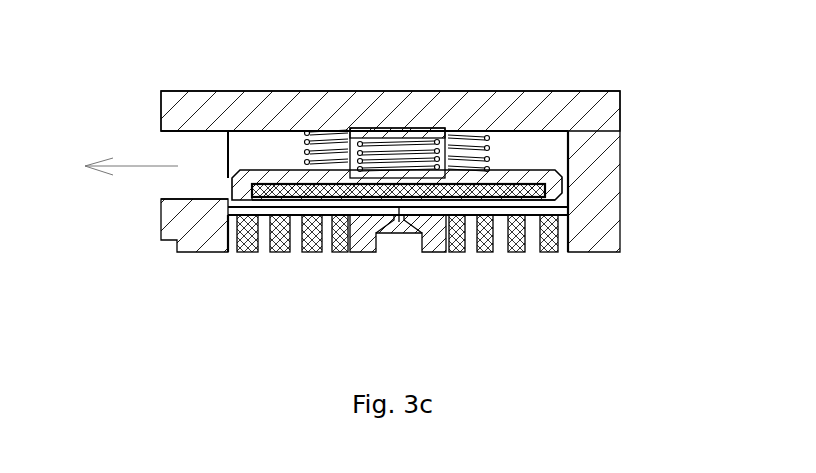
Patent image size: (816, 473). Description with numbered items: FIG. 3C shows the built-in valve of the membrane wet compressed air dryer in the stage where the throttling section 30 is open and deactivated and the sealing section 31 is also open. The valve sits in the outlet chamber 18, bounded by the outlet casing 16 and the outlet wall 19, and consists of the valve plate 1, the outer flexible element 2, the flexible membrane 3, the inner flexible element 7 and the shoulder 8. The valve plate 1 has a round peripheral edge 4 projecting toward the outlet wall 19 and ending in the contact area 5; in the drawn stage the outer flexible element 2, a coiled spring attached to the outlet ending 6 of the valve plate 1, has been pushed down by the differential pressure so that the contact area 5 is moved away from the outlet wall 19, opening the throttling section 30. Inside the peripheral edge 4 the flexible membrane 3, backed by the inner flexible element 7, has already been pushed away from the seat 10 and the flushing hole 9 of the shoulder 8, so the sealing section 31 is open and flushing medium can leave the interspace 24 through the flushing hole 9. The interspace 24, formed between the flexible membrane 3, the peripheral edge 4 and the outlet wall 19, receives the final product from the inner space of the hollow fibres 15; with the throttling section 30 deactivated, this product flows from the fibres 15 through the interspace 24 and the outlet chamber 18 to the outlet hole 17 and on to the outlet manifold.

The valve plate 1 is at (523, 178).
The outer flexible element 2 is at (490, 150).
The flexible membrane 3 is at (545, 208).
The peripheral edge 4 is at (553, 191).
The contact area 5 is at (229, 200).
The outlet ending 6 is at (427, 137).
The inner flexible element 7 is at (400, 157).
The shoulder 8 is at (435, 235).
The flushing hole 9 is at (397, 222).
The seat 10 is at (387, 168).
The hollow fibres 15 is at (532, 250).
The outlet casing 16 is at (225, 107).
The outlet hole 17 is at (197, 165).
The outlet chamber 18 is at (278, 157).
The outlet wall 19 is at (305, 235).
The interspace 24 is at (510, 206).
The throttling section 30 is at (232, 218).
The sealing section 31 is at (392, 207).